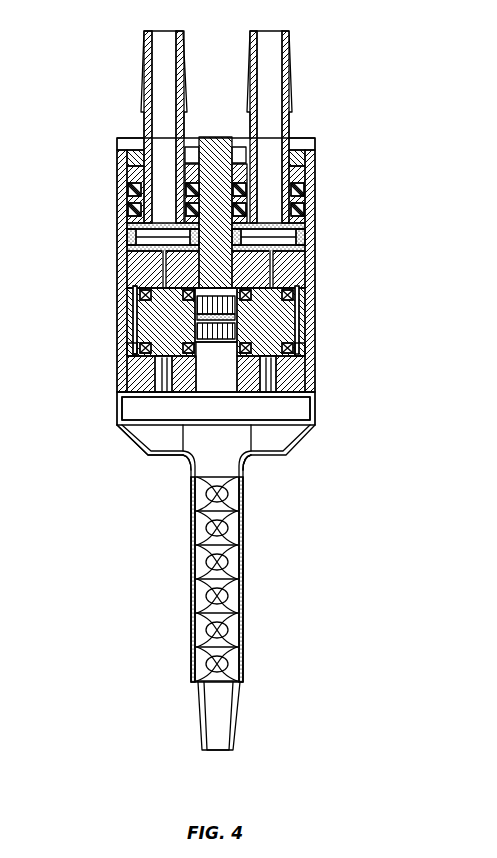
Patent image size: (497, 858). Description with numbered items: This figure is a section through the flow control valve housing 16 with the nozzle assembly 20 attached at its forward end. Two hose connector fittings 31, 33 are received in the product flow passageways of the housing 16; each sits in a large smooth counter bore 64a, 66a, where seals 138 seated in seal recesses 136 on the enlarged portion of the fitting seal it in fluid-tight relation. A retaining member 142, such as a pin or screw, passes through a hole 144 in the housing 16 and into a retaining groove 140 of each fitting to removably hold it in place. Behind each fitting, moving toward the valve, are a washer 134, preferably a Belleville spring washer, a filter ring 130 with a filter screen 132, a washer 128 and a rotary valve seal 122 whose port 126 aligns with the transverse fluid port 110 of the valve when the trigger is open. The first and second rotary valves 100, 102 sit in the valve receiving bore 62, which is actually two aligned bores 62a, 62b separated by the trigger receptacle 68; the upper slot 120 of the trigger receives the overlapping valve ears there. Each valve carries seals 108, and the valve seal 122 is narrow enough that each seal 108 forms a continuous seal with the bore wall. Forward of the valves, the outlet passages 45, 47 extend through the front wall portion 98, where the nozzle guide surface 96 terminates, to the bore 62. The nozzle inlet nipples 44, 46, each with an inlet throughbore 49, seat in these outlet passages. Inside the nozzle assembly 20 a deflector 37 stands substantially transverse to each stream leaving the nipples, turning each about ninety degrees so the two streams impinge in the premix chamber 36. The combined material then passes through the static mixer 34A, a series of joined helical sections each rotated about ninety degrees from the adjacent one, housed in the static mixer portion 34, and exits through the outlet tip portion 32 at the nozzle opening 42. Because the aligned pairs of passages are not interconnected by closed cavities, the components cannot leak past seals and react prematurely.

The nozzle assembly 20 is at (244, 570).
The flow control valve housing 16 is at (122, 200).
The hose connector fitting 31 is at (293, 88).
The hose connector fitting 33 is at (141, 88).
The outlet tip portion 32 is at (200, 718).
The static mixer portion 34 is at (191, 540).
The static mixer 34A is at (198, 582).
The premix chamber 36 is at (288, 448).
The deflector 37 is at (184, 462).
The nozzle opening 42 is at (221, 750).
The nozzle inlet nipple 44 is at (300, 396).
The outlet passage 45 is at (272, 372).
The nozzle inlet nipple 46 is at (122, 406).
The outlet passage 47 is at (160, 372).
The inlet throughbore 49 is at (302, 428).
The valve receiving bore 62 is at (148, 350).
The aligned bore 62a is at (142, 342).
The aligned bore 62b is at (300, 344).
The counter bore 64a is at (302, 196).
The counter bore 66a is at (135, 182).
The trigger receptacle 68 is at (140, 272).
The nozzle guide surface 96 is at (118, 425).
The front wall portion 98 is at (140, 443).
The first rotary valve 100 is at (262, 302).
The second rotary valve 102 is at (148, 302).
The seal 108 is at (270, 288).
The transverse fluid port 110 is at (135, 322).
The upper slot 120 is at (246, 468).
The rotary valve seal 122 is at (135, 250).
The port 126 is at (302, 254).
The washer 128 is at (135, 238).
The filter ring 130 is at (135, 228).
The filter screen 132 is at (302, 240).
The washer 134 is at (302, 228).
The seal recess 136 is at (302, 176).
The seal 138 is at (150, 165).
The retaining groove 140 is at (234, 150).
The retaining member 142 is at (312, 152).
The hole 144 is at (125, 140).